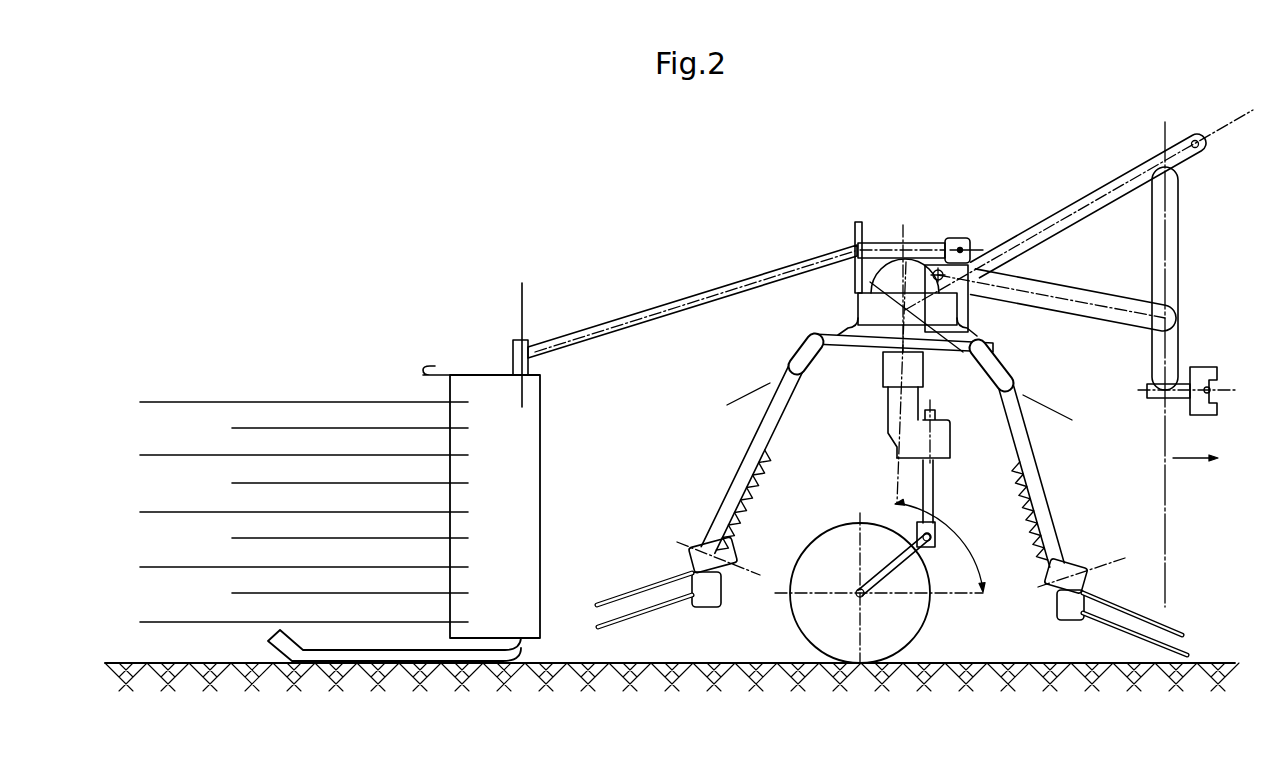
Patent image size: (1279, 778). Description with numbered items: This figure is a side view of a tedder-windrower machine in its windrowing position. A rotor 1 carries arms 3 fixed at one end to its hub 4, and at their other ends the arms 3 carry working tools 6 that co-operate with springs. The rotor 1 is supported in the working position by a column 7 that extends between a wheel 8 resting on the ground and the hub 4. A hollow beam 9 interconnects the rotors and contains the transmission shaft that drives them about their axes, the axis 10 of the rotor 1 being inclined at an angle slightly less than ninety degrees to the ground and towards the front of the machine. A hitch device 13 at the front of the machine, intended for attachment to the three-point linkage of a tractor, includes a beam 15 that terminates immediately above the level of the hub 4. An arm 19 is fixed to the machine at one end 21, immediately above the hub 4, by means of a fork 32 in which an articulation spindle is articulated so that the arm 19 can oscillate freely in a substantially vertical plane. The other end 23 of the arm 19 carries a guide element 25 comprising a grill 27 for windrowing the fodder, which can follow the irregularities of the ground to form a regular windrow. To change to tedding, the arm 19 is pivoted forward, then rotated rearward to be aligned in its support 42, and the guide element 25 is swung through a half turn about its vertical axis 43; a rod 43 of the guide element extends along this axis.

The rotor 1 is at (835, 331).
The arms 3 is at (746, 463).
The hub 4 is at (880, 346).
The working tools 6 is at (640, 590).
The column 7 is at (937, 461).
The wheel 8 is at (810, 546).
The hollow beam 9 is at (891, 275).
The rotor axis 10 is at (890, 462).
The hitch device 13 is at (1181, 243).
The beam 15 is at (1092, 317).
The arm 19 is at (720, 288).
The end of arm 21 is at (916, 242).
The end of arm 23 is at (532, 352).
The guide element 25 is at (542, 471).
The grill 27 is at (323, 402).
The fork 32 is at (955, 238).
The support 42 is at (855, 236).
The vertical axis 43 is at (520, 330).